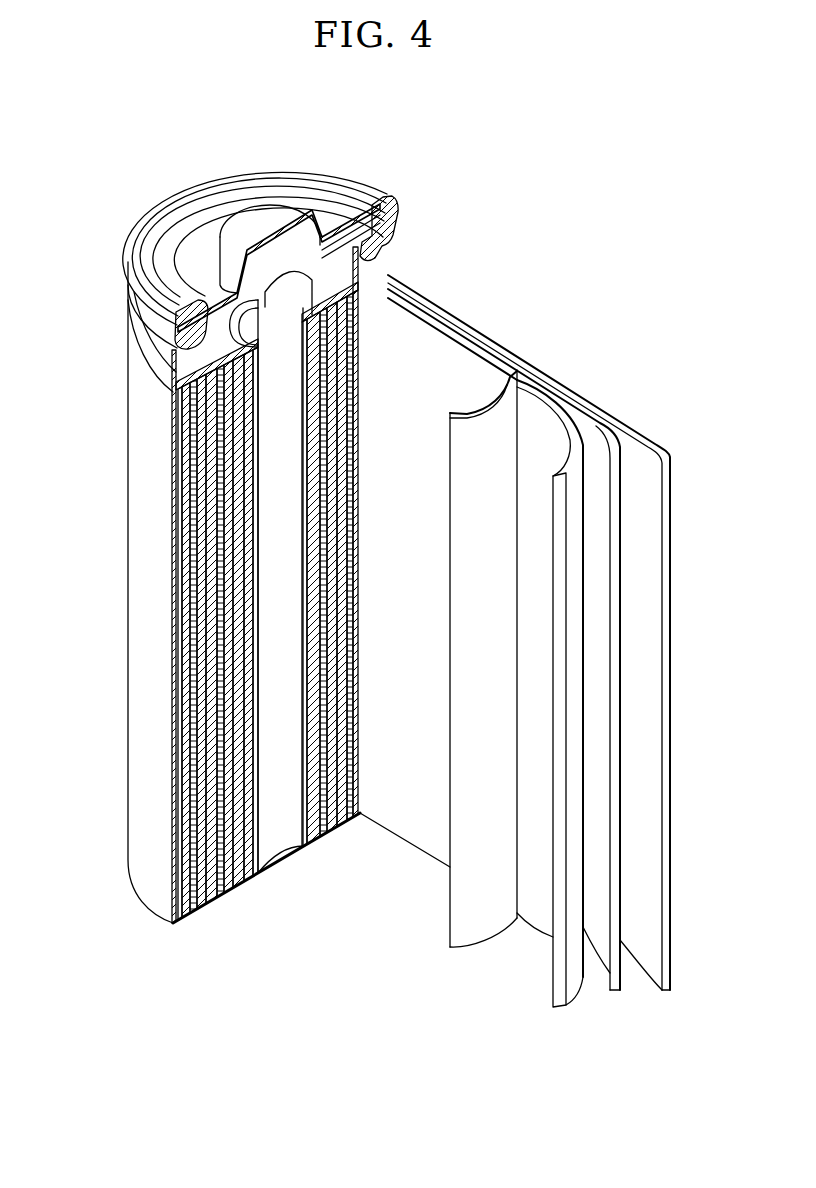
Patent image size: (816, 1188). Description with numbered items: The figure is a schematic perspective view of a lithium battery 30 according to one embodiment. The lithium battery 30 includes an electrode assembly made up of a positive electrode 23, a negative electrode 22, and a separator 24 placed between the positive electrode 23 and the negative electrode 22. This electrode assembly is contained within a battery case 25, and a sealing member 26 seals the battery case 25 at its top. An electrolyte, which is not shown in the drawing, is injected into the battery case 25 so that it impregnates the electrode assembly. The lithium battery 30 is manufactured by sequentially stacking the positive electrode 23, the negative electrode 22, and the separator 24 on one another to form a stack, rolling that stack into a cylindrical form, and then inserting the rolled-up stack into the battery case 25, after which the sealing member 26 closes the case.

The lithium battery 30 is at (549, 213).
The negative electrode 22 is at (671, 545).
The positive electrode 23 is at (543, 388).
The separator 24 is at (472, 346).
The battery case 25 is at (130, 600).
The sealing member 26 is at (255, 213).